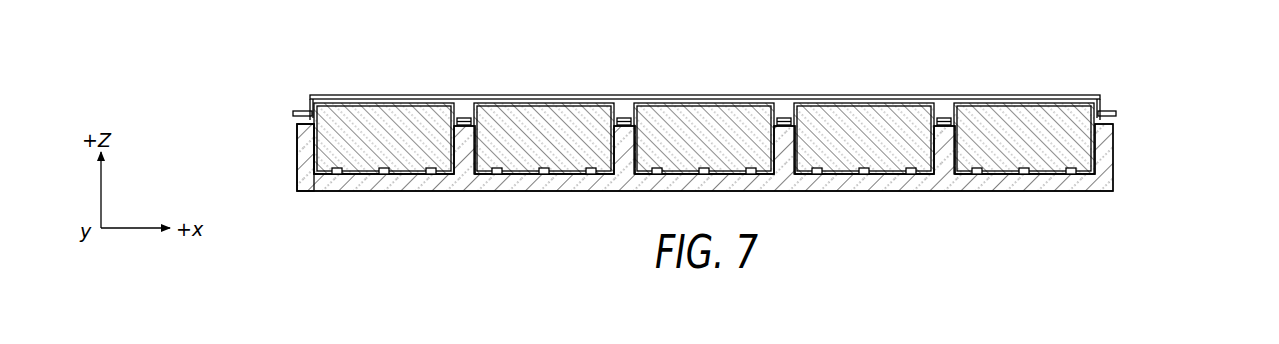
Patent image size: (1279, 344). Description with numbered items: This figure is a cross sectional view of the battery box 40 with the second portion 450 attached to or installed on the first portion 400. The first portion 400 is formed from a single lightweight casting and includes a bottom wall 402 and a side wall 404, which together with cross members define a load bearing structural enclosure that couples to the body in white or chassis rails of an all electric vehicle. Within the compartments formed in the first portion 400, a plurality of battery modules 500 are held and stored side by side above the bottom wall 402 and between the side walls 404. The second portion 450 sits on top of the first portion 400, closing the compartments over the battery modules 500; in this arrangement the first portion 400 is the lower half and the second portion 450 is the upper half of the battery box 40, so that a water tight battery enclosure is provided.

The battery box 40 is at (1178, 60).
The first portion 400 is at (1147, 133).
The bottom wall 402 is at (1017, 192).
The side wall 404 is at (296, 162).
The second portion 450 is at (1052, 92).
The battery module 500 is at (390, 110).